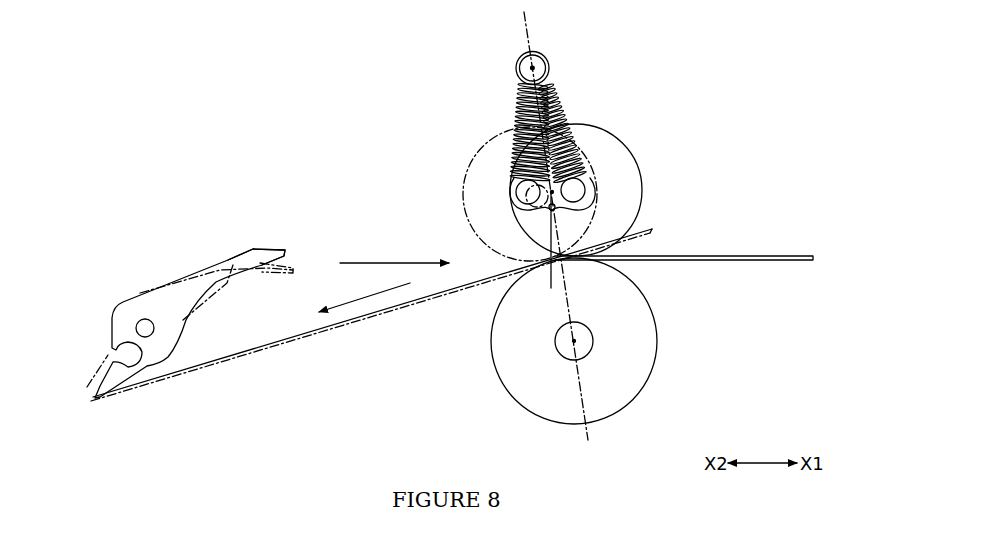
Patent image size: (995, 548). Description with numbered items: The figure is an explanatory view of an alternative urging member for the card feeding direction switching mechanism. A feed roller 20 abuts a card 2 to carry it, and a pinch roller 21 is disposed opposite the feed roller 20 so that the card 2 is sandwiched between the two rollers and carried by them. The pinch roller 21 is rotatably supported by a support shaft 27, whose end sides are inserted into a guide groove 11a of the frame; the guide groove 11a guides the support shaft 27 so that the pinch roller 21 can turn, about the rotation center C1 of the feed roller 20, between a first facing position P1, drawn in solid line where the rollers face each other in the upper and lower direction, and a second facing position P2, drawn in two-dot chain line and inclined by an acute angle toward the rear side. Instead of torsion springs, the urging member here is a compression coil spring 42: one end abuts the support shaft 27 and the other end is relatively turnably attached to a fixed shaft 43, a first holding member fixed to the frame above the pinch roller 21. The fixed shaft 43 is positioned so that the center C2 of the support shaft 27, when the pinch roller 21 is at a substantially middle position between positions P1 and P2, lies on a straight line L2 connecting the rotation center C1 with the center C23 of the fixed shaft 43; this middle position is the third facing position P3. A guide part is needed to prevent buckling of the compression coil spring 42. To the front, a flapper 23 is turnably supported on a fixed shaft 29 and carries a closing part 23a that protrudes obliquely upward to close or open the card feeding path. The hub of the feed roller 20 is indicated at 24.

The card 2 is at (736, 262).
The guide groove 11a is at (550, 253).
The feed roller 20 is at (657, 340).
The pinch roller 21 is at (463, 192).
The flapper 23 is at (190, 314).
The closing part 23a is at (260, 264).
The roller shaft 24 is at (596, 333).
The support shaft 27 is at (512, 180).
The fixed shaft 29 is at (154, 329).
The compression coil spring 42 is at (514, 108).
The fixed shaft 43 is at (549, 69).
The rotation center of the feed roller C1 is at (576, 341).
The center of the support shaft C2 is at (553, 193).
The center of the fixed shaft C23 is at (534, 66).
The straight line L2 is at (528, 33).
The first facing position P1 is at (669, 203).
The second facing position P2 is at (448, 221).
The third facing position P3 is at (580, 41).